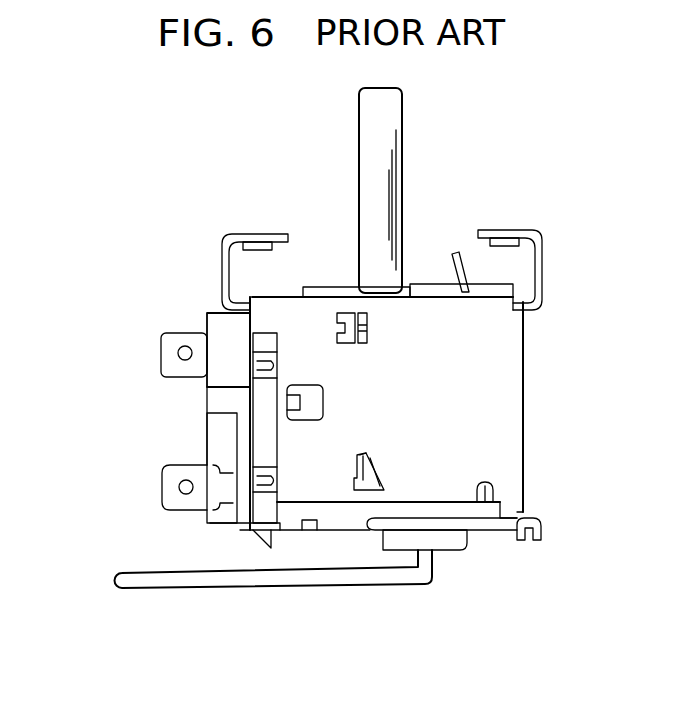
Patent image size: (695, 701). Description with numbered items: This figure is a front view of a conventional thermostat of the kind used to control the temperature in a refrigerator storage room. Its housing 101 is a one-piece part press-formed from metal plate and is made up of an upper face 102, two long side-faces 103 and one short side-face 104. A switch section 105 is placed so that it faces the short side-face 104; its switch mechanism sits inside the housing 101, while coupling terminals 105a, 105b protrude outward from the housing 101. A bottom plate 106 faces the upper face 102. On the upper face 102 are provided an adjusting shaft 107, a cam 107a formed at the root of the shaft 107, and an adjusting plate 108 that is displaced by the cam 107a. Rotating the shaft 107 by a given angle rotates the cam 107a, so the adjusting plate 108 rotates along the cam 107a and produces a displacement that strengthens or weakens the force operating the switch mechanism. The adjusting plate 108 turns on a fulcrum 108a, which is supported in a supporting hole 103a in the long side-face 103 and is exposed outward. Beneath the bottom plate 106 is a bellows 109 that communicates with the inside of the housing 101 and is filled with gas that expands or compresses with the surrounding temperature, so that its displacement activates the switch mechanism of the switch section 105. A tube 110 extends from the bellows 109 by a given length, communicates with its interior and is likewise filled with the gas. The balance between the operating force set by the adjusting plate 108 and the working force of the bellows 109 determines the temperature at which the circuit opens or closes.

The housing 101 is at (552, 407).
The upper face 102 is at (280, 297).
The long side-face 103 is at (480, 422).
The supporting hole 103a is at (358, 476).
The short side-face 104 is at (530, 380).
The switch section 105 is at (230, 398).
The coupling terminal 105a is at (177, 352).
The coupling terminal 105b is at (178, 490).
The bottom plate 106 is at (487, 525).
The adjusting shaft 107 is at (385, 118).
The cam 107a is at (343, 283).
The adjusting plate 108 is at (478, 238).
The fulcrum 108a is at (367, 460).
The bellows 109 is at (453, 540).
The tube 110 is at (192, 578).